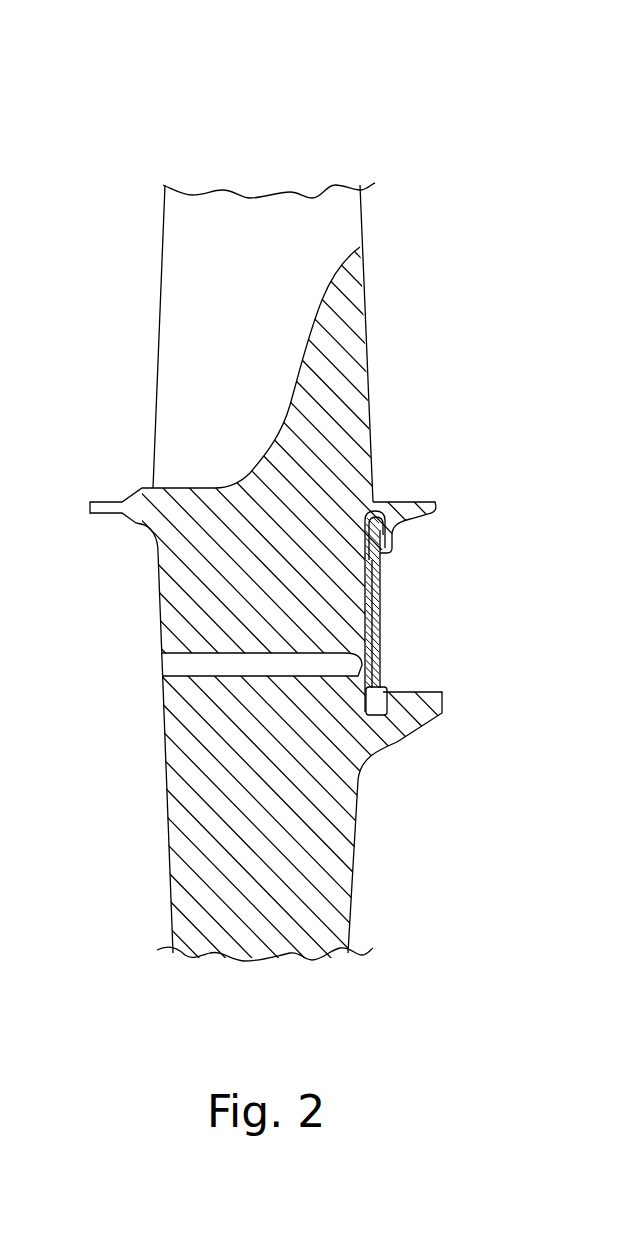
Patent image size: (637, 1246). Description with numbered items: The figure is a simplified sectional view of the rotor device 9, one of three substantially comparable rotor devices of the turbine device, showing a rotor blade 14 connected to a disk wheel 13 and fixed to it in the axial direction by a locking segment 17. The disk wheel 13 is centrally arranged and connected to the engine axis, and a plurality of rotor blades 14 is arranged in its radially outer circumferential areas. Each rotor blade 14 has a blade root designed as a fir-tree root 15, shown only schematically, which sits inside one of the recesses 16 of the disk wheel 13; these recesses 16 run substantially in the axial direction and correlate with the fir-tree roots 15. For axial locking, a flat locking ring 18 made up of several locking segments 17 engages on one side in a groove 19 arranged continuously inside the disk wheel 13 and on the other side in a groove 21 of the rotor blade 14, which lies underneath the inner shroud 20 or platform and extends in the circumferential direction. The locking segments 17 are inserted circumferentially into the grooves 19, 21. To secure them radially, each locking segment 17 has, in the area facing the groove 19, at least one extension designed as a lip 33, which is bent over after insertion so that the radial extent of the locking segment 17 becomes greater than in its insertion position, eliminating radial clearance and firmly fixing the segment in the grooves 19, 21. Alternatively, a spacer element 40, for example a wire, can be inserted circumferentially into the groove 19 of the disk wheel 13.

The rotor device 9 is at (150, 118).
The disk wheel 13 is at (166, 861).
The rotor blade 14 is at (157, 560).
The fir-tree root 15 is at (220, 588).
The recess 16 is at (203, 637).
The locking segment 17 is at (380, 637).
The locking ring 18 is at (380, 592).
The groove 19 is at (404, 745).
The inner shroud 20 is at (415, 500).
The groove 21 is at (380, 503).
The lip 33 is at (370, 712).
The spacer element 40 is at (443, 716).